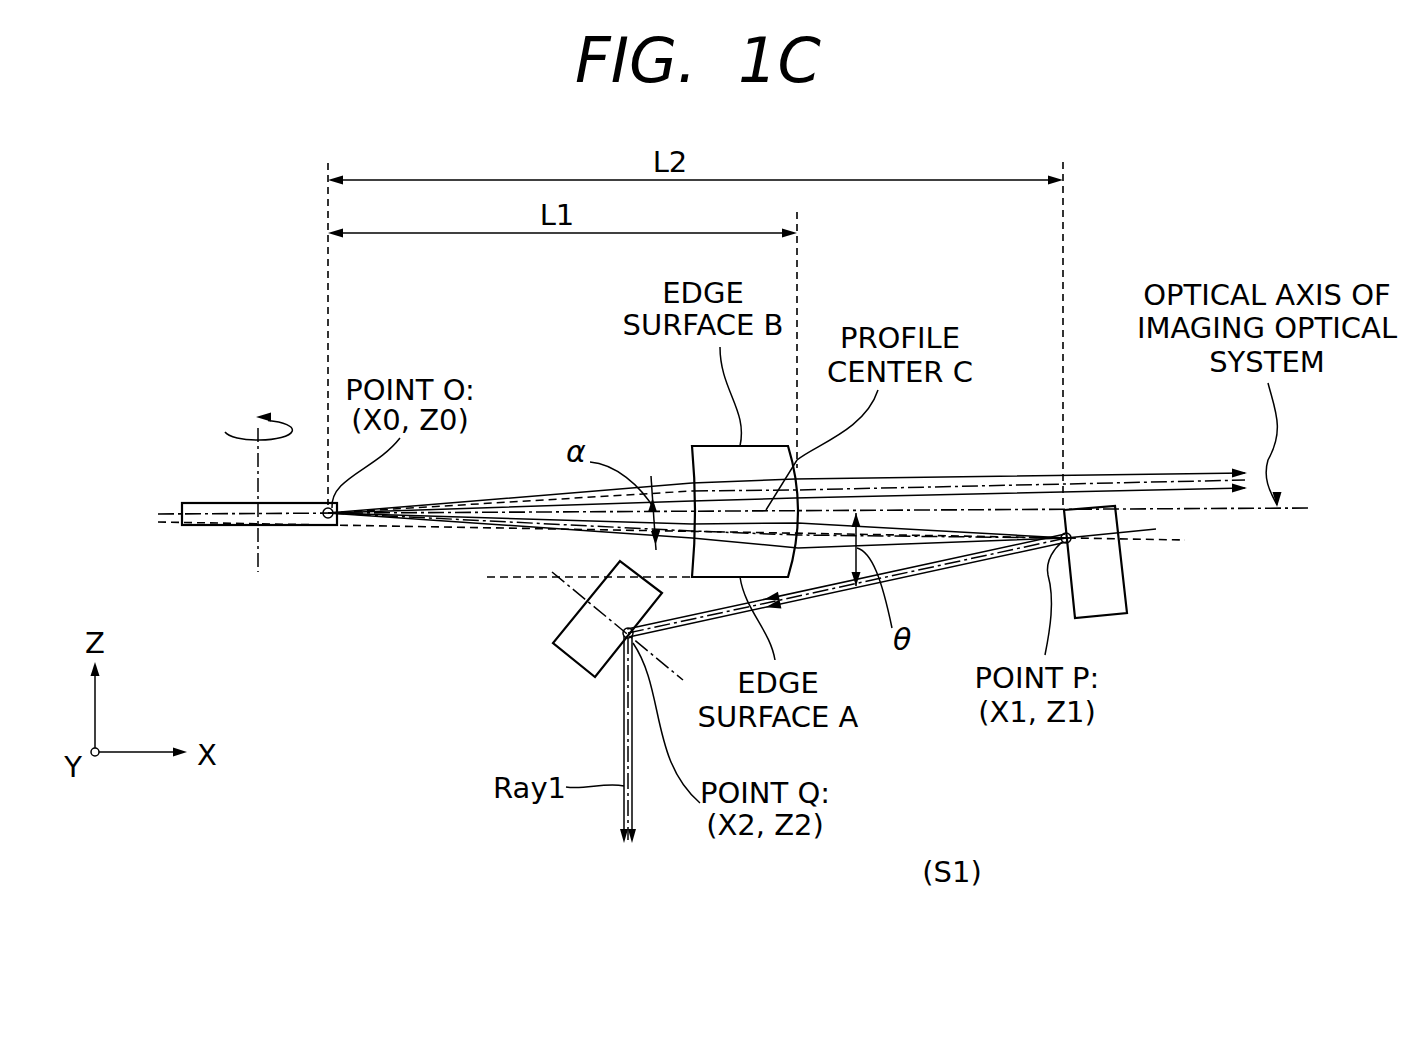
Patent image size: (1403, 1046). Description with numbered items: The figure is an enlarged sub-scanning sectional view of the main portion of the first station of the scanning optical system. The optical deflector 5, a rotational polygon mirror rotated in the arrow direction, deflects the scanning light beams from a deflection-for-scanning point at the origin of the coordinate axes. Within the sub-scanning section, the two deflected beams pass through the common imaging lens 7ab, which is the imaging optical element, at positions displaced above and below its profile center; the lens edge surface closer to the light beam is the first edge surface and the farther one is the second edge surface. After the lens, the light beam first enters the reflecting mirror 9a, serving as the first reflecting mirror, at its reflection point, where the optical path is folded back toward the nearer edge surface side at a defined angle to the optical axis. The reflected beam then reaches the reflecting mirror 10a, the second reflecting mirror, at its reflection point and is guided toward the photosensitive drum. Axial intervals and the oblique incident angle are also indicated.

The optical deflector 5 is at (302, 528).
The common imaging lens 7ab is at (700, 446).
The reflecting mirror 9a is at (1120, 594).
The reflecting mirror 10a is at (576, 654).